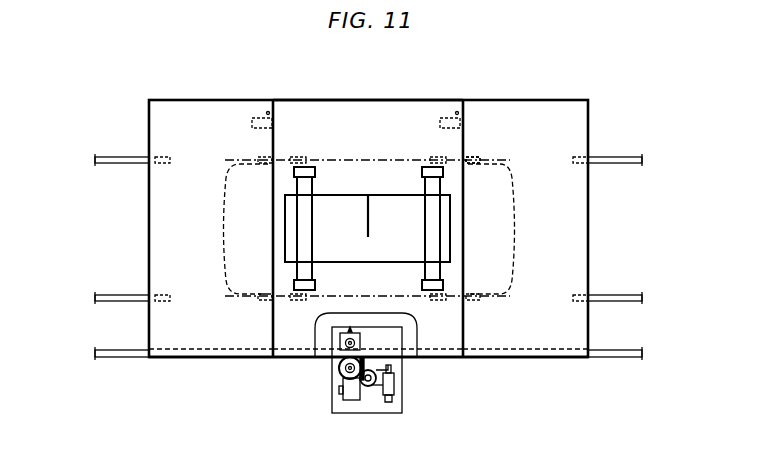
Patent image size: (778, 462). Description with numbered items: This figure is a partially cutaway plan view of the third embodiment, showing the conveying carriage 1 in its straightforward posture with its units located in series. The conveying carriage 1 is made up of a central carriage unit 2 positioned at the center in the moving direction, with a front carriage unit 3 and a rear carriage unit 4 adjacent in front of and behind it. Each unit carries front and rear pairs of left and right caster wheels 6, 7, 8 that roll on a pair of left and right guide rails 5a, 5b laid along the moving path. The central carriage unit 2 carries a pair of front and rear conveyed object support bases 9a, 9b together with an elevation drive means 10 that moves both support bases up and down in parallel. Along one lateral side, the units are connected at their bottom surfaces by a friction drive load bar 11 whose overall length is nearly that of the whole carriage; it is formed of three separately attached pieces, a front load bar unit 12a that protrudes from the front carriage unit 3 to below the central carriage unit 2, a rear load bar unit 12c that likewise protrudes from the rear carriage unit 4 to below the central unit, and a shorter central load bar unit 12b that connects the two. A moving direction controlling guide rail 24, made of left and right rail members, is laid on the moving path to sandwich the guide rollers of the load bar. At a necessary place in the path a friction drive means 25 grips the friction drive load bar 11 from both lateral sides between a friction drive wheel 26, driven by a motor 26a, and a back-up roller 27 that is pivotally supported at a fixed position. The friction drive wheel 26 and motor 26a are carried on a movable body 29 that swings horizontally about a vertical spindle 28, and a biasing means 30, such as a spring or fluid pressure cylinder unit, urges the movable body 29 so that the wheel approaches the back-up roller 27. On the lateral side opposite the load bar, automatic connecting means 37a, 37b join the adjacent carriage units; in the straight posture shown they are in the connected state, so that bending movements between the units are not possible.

The conveying carriage 1 is at (148, 232).
The central carriage unit 2 is at (343, 99).
The front carriage unit 3 is at (165, 190).
The rear carriage unit 4 is at (585, 225).
The guide rail 5a is at (115, 295).
The guide rail 5b is at (115, 157).
The caster wheel 6 is at (163, 157).
The caster wheel 7 is at (282, 157).
The caster wheel 8 is at (480, 157).
The conveyed object support base 9a is at (305, 222).
The conveyed object support base 9b is at (432, 228).
The elevation drive means 10 is at (376, 210).
The friction drive load bar 11 is at (248, 362).
The front load bar unit 12a is at (200, 350).
The central load bar unit 12b is at (360, 343).
The rear load bar unit 12c is at (529, 350).
The moving direction controlling guide rail 24 is at (118, 357).
The friction drive means 25 is at (408, 400).
The friction drive wheel 26 is at (339, 367).
The motor 26a is at (348, 398).
The back-up roller 27 is at (340, 342).
The vertical spindle 28 is at (369, 387).
The movable body 29 is at (386, 340).
The biasing means 30 is at (396, 390).
The automatic connecting means 37a is at (258, 114).
The automatic connecting means 37b is at (444, 114).